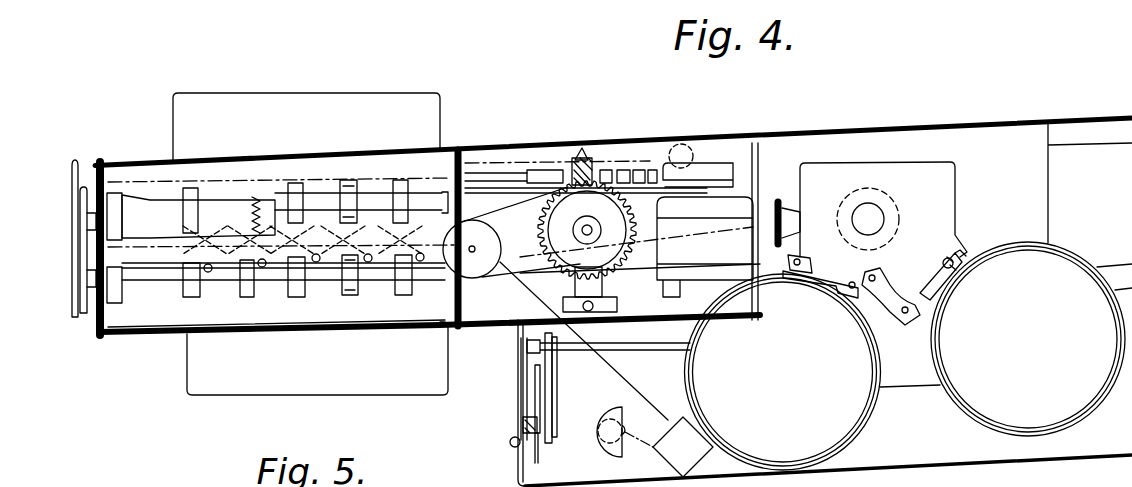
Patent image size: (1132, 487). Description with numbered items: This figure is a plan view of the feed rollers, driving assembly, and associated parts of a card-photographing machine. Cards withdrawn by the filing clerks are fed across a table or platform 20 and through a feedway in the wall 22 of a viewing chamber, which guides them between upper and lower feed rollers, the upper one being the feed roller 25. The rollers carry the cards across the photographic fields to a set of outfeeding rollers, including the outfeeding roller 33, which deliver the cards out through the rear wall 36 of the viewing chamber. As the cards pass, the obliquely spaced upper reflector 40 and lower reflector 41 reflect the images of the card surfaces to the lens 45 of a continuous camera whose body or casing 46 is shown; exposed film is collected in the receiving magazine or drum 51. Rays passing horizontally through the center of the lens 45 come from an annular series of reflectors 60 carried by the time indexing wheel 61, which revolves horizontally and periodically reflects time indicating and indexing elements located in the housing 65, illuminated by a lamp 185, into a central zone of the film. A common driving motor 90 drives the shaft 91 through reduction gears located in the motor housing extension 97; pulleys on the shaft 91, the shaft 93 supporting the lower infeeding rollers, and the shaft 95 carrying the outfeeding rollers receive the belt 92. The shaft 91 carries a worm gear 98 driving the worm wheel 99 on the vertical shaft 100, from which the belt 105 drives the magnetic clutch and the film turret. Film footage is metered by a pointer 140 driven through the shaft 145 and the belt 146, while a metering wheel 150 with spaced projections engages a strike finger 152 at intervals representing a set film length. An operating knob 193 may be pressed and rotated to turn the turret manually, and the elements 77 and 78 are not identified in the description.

The table or platform 20 is at (205, 378).
The wall of viewing chamber 22 is at (238, 335).
The upper feed roller 25 is at (352, 297).
The outfeeding roller 33 is at (345, 182).
The rear wall of viewing chamber 36 is at (246, 160).
The upper reflector 40 is at (182, 258).
The lower reflector 41 is at (1028, 339).
The lens 45 is at (780, 200).
The camera body or casing 46 is at (918, 185).
The receiving magazine or drum 51 is at (783, 372).
The reflectors 60 is at (499, 278).
The time indexing wheel 61 is at (477, 268).
The housing 65 is at (669, 447).
The belt 77 is at (465, 222).
The partition wall 78 is at (457, 301).
The driving motor 90 is at (705, 247).
The shaft 91 is at (495, 170).
The belt 92 is at (85, 318).
The shaft 93 is at (88, 284).
The shaft 95 is at (88, 220).
The motor housing extension 97 is at (716, 172).
The worm gear 98 is at (581, 150).
The worm wheel 99 is at (541, 225).
The vertical shaft 100 is at (580, 231).
The belt 105 is at (636, 298).
The metering index finger or pointer 140 is at (520, 405).
The shaft 145 is at (637, 350).
The belt 146 is at (555, 390).
The metering wheel 150 is at (538, 460).
The strike finger 152 is at (552, 410).
The lamp 185 is at (602, 450).
The operating knob 193 is at (885, 218).